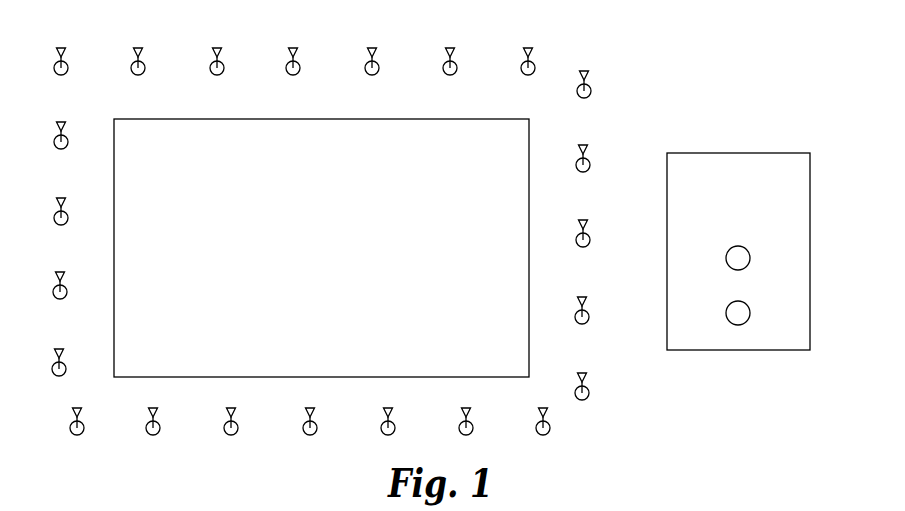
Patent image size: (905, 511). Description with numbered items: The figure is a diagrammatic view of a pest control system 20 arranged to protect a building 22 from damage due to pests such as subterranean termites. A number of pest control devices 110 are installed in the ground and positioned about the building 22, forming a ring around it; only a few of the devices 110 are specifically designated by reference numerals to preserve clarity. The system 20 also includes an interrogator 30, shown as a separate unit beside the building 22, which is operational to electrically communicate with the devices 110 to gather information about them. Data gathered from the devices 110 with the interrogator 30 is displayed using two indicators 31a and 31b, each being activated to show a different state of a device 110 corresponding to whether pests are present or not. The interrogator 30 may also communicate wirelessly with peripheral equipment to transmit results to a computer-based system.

The pest control system 20 is at (619, 38).
The building 22 is at (333, 298).
The interrogator 30 is at (750, 218).
The indicator 31a is at (750, 258).
The indicator 31b is at (726, 313).
The pest control device 110 is at (366, 62).